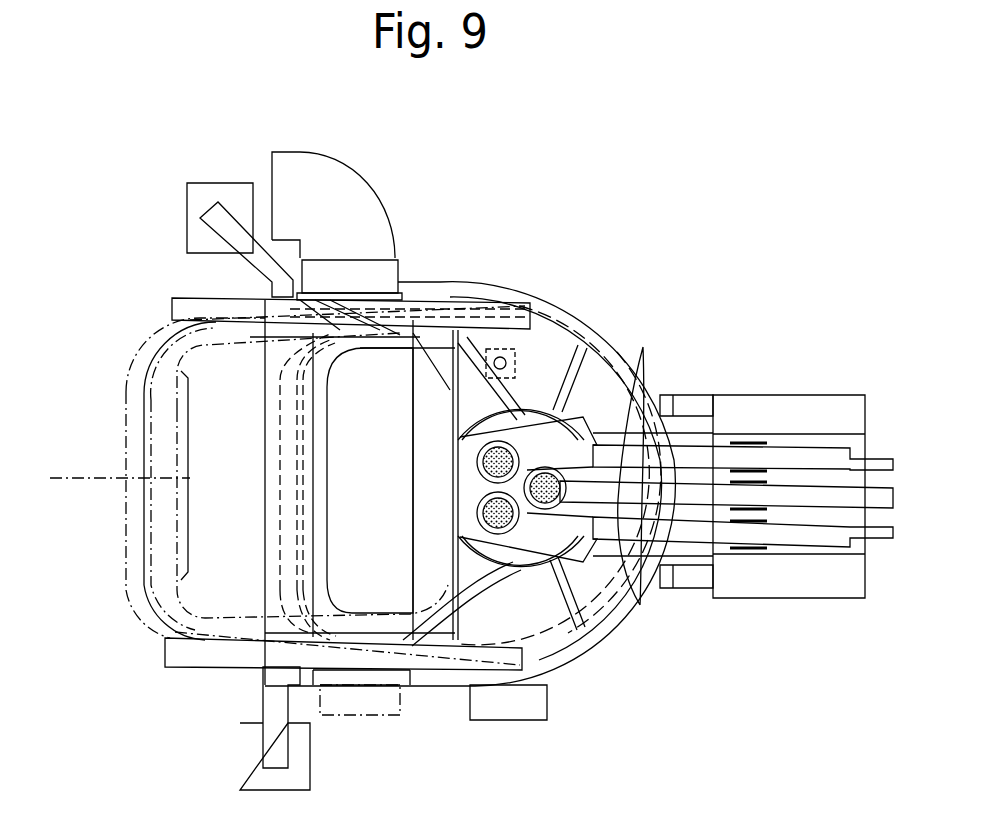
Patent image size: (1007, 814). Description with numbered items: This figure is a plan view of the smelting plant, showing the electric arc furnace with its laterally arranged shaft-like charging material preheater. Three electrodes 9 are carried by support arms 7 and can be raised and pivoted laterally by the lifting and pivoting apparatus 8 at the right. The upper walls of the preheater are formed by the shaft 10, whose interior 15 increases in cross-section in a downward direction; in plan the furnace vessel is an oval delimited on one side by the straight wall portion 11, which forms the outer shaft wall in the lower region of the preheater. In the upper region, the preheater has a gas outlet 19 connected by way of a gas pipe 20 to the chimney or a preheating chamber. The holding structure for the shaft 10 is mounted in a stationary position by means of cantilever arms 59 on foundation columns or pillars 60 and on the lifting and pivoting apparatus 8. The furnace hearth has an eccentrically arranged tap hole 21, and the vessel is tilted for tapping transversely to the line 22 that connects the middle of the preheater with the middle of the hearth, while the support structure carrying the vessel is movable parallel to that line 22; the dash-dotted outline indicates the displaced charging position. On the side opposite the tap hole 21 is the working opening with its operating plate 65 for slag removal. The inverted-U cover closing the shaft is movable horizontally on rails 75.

The support arms 7 is at (641, 466).
The lifting and pivoting apparatus 8 is at (800, 394).
The electrodes 9 is at (503, 530).
The shaft 10 is at (455, 350).
The straight wall portion 11 is at (183, 470).
The interior of the shaft 15 is at (377, 588).
The gas outlet 19 is at (385, 285).
The gas pipe 20 is at (352, 190).
The tap hole 21 is at (523, 350).
The line 22 is at (88, 470).
The cantilever arms 59 is at (227, 225).
The foundation columns or pillars 60 is at (195, 200).
The operating plate 65 is at (520, 700).
The rails 75 is at (168, 307).